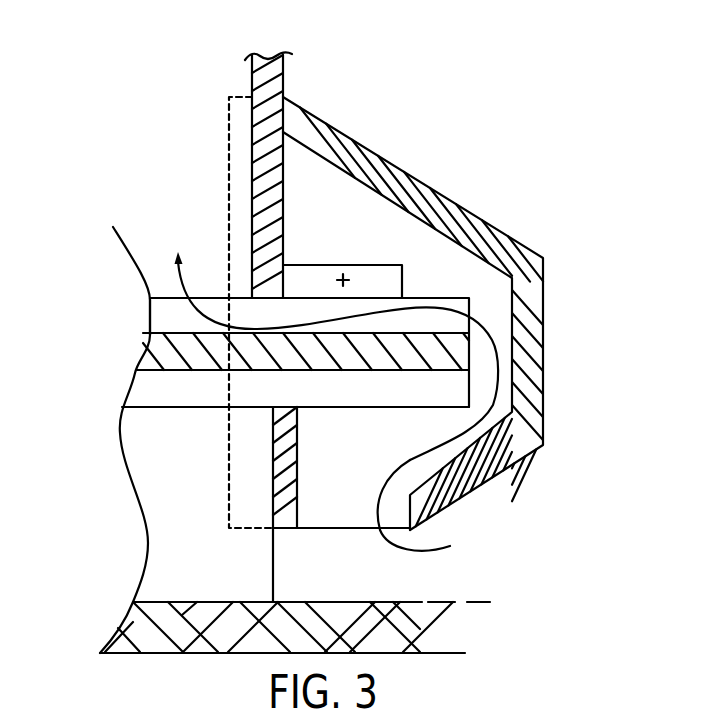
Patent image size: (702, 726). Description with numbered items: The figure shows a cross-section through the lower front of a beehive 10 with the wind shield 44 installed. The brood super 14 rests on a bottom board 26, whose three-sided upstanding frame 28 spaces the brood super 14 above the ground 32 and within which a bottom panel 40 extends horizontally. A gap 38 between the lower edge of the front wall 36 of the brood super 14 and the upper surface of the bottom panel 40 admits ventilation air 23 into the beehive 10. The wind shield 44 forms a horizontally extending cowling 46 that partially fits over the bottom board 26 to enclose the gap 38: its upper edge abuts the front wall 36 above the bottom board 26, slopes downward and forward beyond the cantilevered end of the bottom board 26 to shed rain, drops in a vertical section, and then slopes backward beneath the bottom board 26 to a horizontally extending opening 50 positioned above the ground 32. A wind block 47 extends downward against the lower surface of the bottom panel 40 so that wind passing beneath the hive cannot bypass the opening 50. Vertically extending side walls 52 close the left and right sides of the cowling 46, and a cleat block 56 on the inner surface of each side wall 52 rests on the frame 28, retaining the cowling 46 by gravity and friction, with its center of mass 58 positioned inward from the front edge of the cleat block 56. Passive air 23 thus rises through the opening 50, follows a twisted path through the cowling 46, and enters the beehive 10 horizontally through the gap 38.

The beehive 10 is at (534, 78).
The brood super 14 is at (222, 72).
The ventilation air 23 is at (438, 553).
The bottom board 26 is at (493, 322).
The frame 28 is at (158, 305).
The ground 32 is at (495, 600).
The front wall 36 is at (283, 75).
The gap 38 is at (258, 312).
The bottom panel 40 is at (165, 332).
The wind shield 44 is at (527, 230).
The cowling 46 is at (413, 178).
The wind block 47 is at (273, 503).
The opening 50 is at (355, 540).
The side walls 52 is at (393, 220).
The cleat block 56 is at (313, 262).
The center of mass 58 is at (380, 264).